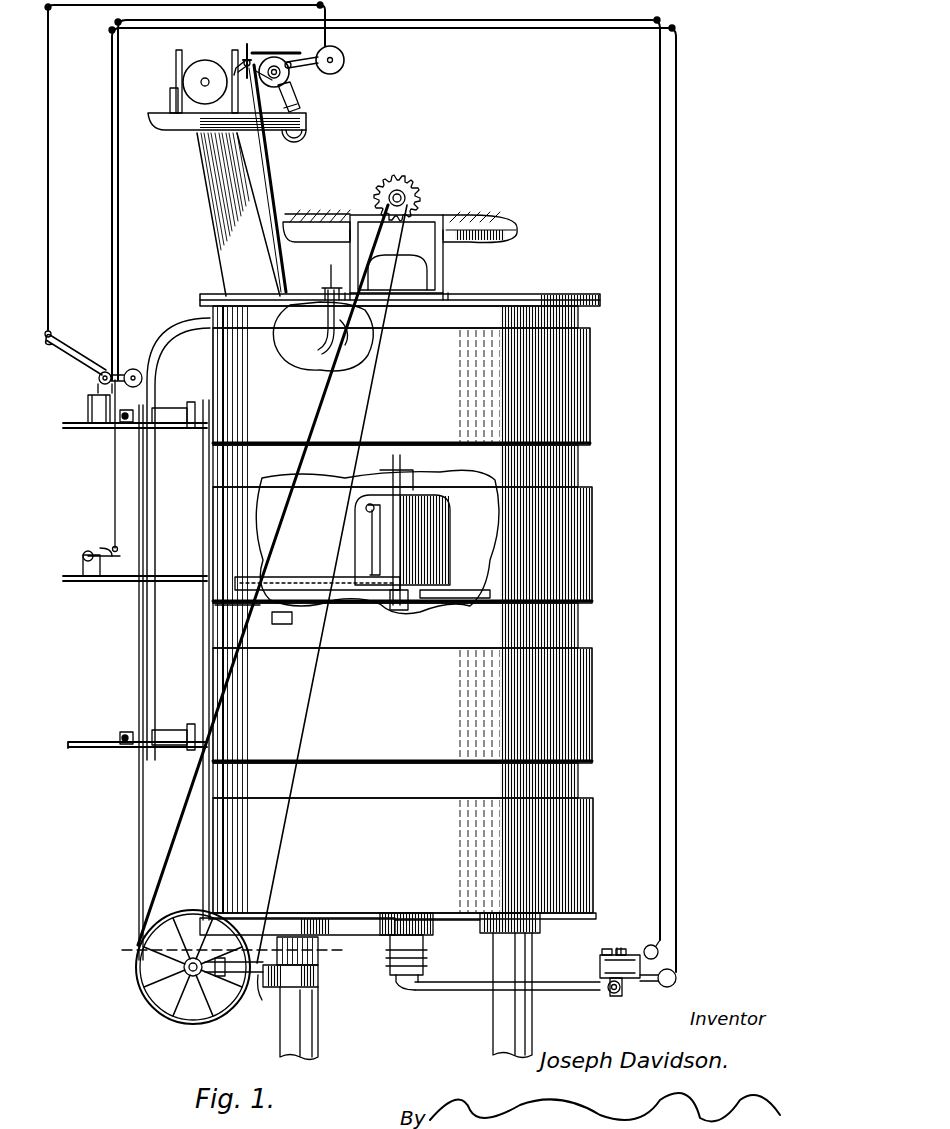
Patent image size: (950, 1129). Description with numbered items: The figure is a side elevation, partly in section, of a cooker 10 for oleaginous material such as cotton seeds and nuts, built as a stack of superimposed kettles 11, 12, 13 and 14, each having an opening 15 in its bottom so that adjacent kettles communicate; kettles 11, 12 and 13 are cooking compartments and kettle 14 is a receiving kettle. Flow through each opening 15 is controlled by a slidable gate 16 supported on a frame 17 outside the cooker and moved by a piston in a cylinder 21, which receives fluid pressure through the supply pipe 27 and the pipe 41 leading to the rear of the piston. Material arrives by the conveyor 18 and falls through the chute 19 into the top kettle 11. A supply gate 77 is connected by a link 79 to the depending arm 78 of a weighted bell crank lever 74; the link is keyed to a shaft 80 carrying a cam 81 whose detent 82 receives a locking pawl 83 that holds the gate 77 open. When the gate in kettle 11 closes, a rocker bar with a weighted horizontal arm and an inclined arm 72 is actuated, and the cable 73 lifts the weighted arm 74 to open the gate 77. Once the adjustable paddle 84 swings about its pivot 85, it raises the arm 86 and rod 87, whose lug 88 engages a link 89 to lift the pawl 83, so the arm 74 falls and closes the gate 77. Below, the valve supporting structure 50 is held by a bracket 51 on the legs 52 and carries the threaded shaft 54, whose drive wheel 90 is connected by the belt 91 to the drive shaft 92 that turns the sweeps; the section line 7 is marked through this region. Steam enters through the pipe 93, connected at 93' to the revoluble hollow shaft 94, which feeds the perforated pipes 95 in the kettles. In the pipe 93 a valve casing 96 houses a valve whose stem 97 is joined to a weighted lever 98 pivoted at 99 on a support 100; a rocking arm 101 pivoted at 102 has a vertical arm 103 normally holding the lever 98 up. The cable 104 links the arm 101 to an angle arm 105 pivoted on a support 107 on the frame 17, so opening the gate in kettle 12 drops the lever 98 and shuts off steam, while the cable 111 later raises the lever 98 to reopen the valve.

The section line 7 is at (224, 945).
The cooker 10 is at (575, 312).
The top kettle 11 is at (575, 392).
The second kettle 12 is at (575, 528).
The third kettle 13 is at (575, 710).
The receiving kettle 14 is at (575, 828).
The opening 15 is at (230, 615).
The slidable gate 16 is at (282, 612).
The frame 17 is at (110, 582).
The conveyor 18 is at (183, 82).
The pipe or chute 19 is at (212, 190).
The cylinder 21 is at (170, 408).
The supply pipe 27 is at (355, 920).
The pipe 41 is at (203, 462).
The valve supporting structure 50 is at (262, 1000).
The bracket 51 is at (318, 982).
The legs 52 is at (300, 1030).
The threaded shaft or screw 54 is at (160, 1000).
The inclined arm 72 is at (65, 365).
The flexible member or cable 73 is at (48, 316).
The weighted arm 74 is at (340, 52).
The gate 77 is at (200, 115).
The depending arm 78 is at (300, 94).
The link 79 is at (300, 108).
The shaft 80 is at (290, 74).
The cam 81 is at (248, 52).
The detent 82 is at (292, 60).
The locking pawl 83 is at (268, 52).
The adjustable paddle 84 is at (334, 342).
The pivot 85 is at (326, 290).
The arm 86 is at (318, 318).
The rod 87 is at (280, 200).
The lug 88 is at (252, 74).
The link 89 is at (238, 66).
The drive wheel 90 is at (170, 913).
The belt 91 is at (160, 838).
The drive shaft 92 is at (405, 188).
The pipe 93 is at (507, 971).
The connection 93' is at (406, 968).
The revoluble hollow shaft 94 is at (425, 580).
The perforated pipes 95 is at (297, 577).
The valve casing 96 is at (616, 996).
The valve stem 97 is at (620, 952).
The weighted lever 98 is at (616, 950).
The pivot 99 is at (602, 952).
The support 100 is at (606, 985).
The right angle lever or rocking arm 101 is at (655, 982).
The pivot 102 is at (672, 968).
The vertical arm 103 is at (658, 948).
The cable 104 is at (112, 486).
The angle arm 105 is at (102, 548).
The support 107 is at (86, 567).
The cable 111 is at (118, 305).